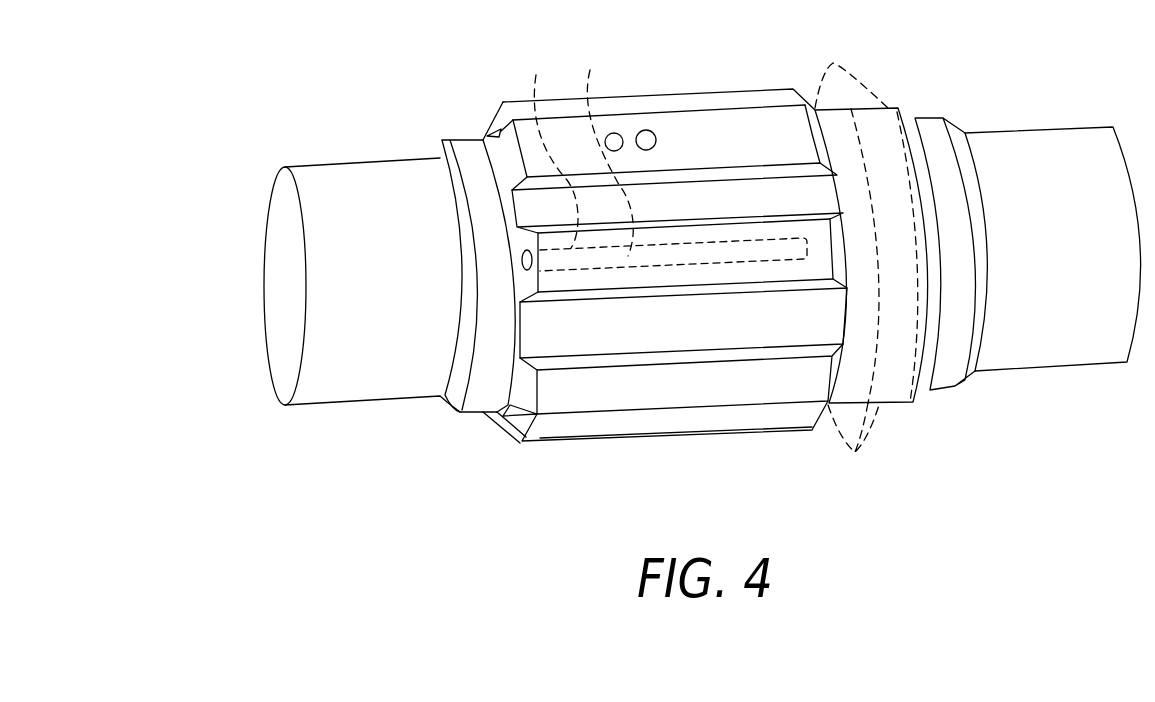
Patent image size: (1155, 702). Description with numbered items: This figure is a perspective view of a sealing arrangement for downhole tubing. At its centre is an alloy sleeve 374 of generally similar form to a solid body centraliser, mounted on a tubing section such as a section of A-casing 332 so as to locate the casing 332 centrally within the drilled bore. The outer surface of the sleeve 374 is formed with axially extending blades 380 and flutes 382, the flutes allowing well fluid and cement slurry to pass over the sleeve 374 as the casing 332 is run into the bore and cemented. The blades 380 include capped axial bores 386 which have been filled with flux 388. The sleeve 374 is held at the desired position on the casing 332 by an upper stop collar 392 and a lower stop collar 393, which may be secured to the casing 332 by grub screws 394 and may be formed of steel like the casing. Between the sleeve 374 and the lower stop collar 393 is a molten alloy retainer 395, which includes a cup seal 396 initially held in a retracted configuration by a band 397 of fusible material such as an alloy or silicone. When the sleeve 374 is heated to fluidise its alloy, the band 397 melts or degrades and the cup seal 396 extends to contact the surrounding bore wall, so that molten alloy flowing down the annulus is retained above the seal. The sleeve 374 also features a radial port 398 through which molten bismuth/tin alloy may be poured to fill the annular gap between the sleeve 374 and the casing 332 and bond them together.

The A-casing 332 is at (1033, 132).
The alloy sleeve 374 is at (665, 261).
The blades 380 is at (725, 393).
The flutes 382 is at (593, 332).
The capped axial bores 386 is at (549, 150).
The flux 388 is at (605, 151).
The upper stop collar 392 is at (478, 413).
The lower stop collar 393 is at (947, 391).
The grub screws 394 is at (455, 139).
The molten alloy retainer 395 is at (890, 109).
The cup seal 396 is at (857, 458).
The band of fusible material 397 is at (885, 398).
The radial port 398 is at (648, 131).